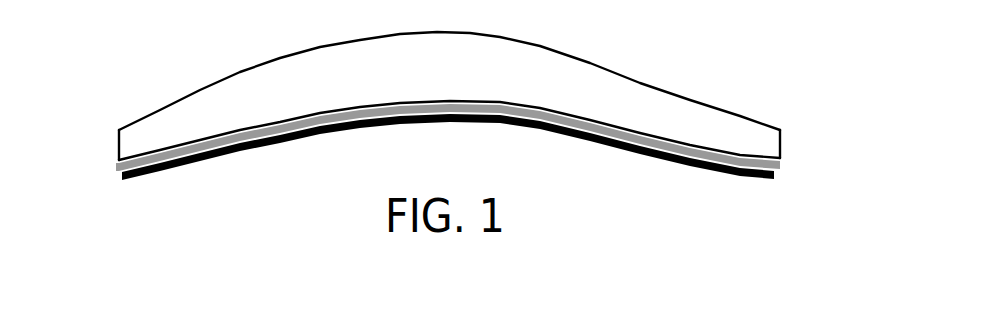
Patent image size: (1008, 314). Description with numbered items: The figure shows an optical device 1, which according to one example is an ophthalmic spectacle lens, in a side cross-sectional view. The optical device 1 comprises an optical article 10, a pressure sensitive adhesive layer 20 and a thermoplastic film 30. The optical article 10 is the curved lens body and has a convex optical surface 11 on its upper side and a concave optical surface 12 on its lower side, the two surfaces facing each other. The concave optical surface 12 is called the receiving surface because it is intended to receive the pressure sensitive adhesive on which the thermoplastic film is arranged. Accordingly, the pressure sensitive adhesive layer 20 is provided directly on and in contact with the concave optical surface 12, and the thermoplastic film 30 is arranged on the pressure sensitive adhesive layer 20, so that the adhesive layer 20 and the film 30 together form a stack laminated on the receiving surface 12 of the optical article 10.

The optical device 1 is at (463, 150).
The optical article 10 is at (432, 96).
The convex optical surface 11 is at (159, 110).
The concave optical surface 12 is at (146, 153).
The pressure sensitive adhesive layer 20 is at (786, 177).
The thermoplastic film 30 is at (727, 182).